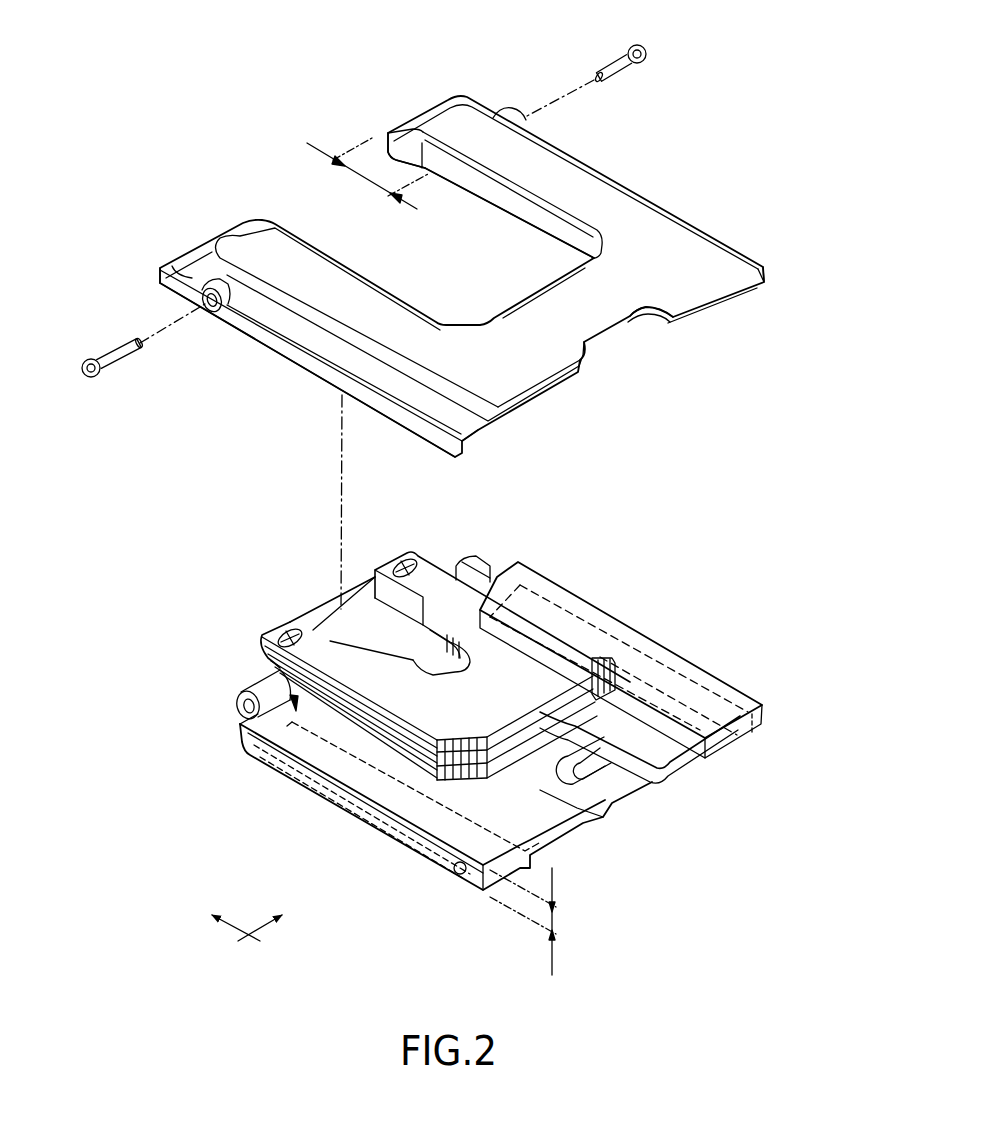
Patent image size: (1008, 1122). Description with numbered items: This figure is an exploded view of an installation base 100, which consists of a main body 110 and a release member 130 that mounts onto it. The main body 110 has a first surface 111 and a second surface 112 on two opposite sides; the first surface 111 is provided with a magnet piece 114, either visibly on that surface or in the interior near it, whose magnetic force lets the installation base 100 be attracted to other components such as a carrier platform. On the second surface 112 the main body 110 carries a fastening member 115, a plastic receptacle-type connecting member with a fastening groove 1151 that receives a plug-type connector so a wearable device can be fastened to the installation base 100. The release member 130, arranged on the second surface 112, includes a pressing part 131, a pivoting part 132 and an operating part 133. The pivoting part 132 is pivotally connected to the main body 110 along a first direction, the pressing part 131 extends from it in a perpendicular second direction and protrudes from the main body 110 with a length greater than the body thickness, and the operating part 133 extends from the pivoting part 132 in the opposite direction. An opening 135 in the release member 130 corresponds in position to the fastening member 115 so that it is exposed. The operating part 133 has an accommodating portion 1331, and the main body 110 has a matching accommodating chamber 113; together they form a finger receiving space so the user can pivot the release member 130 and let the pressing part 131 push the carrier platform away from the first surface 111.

The installation base 100 is at (83, 82).
The main body 110 is at (262, 774).
The first surface 111 is at (330, 815).
The second surface 112 is at (243, 688).
The accommodating chamber 113 is at (600, 810).
The magnet piece 114 is at (667, 690).
The fastening member 115 is at (314, 650).
The fastening groove 1151 is at (442, 643).
The release member 130 is at (302, 262).
The pressing part 131 is at (161, 271).
The pivoting part 132 is at (211, 322).
The operating part 133 is at (410, 431).
The accommodating portion 1331 is at (631, 321).
The opening 135 is at (516, 180).